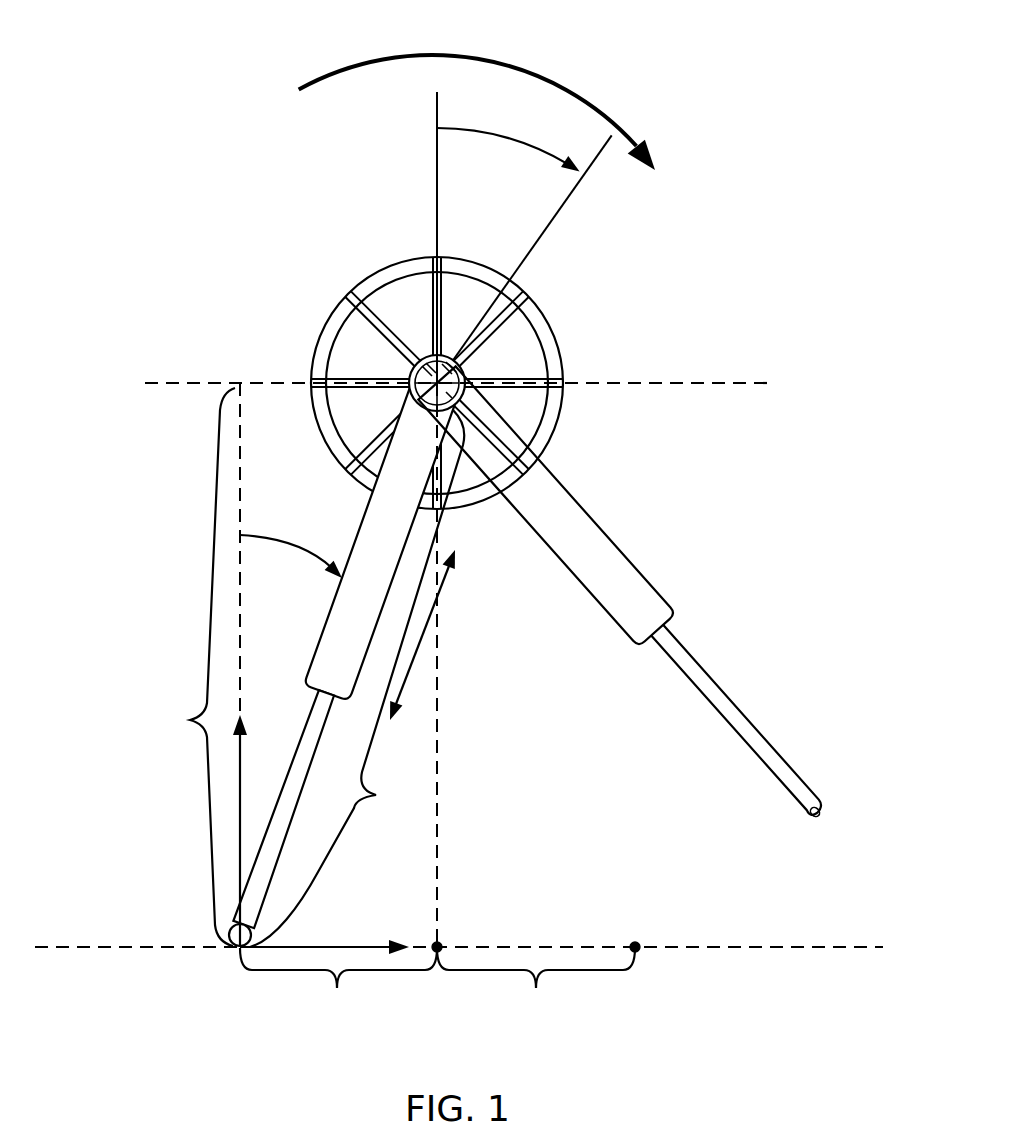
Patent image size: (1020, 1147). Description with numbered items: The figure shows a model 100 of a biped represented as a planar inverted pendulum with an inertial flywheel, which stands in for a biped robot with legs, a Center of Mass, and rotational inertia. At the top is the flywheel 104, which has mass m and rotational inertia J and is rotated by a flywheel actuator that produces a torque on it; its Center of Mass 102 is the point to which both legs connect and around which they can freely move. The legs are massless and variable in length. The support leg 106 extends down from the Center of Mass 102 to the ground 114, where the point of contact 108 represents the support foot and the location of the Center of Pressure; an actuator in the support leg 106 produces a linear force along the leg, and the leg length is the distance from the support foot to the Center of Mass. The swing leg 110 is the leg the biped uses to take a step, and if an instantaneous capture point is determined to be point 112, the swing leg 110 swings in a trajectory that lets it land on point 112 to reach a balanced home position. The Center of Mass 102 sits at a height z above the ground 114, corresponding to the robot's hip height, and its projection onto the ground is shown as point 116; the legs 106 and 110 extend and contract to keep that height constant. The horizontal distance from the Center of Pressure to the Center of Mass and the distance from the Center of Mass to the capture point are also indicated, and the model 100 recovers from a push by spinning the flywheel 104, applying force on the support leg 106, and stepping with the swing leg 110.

The model 100 is at (199, 52).
The Center of Mass 102 is at (455, 364).
The flywheel 104 is at (520, 407).
The support leg 106 is at (338, 663).
The point of contact 108 is at (230, 928).
The swing leg 110 is at (622, 561).
The instantaneous capture point 112 is at (637, 943).
The ground 114 is at (733, 945).
The projection of the Center of Mass 116 is at (437, 945).